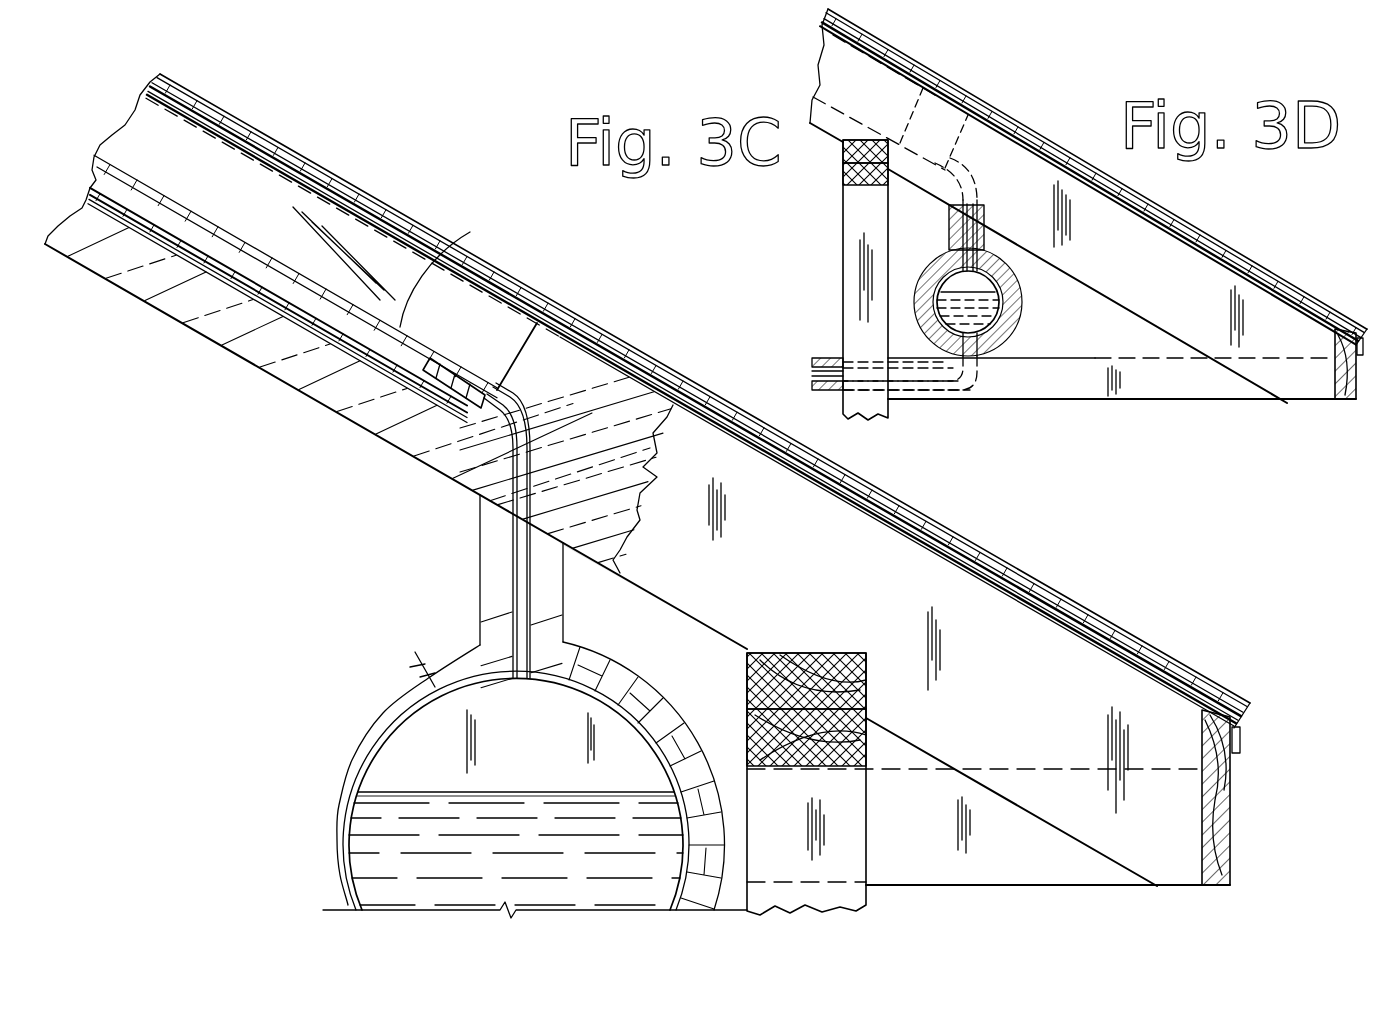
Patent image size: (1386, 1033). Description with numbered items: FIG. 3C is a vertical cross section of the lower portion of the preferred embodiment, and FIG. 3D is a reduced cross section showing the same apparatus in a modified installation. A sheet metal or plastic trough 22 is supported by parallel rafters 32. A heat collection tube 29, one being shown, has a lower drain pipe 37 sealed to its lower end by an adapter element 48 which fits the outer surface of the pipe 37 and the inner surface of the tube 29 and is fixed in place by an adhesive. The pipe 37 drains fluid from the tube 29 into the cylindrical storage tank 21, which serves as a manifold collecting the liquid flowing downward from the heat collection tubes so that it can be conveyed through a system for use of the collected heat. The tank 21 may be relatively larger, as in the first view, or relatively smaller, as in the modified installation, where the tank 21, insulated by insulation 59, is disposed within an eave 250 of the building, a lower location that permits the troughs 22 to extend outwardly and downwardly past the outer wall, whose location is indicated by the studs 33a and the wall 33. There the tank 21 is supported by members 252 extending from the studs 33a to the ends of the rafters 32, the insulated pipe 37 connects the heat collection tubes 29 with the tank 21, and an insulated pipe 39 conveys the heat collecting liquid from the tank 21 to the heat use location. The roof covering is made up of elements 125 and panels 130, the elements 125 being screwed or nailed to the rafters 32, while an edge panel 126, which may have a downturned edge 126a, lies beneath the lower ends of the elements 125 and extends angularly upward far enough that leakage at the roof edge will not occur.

In FIG. 3C, the cylindrical storage tank 21 is at (427, 697).
In FIG. 3D, the cylindrical storage tank 21 is at (1009, 334).
In FIG. 3C, the trough 22 is at (565, 320).
In FIG. 3D, the trough 22 is at (988, 100).
In FIG. 3C, the heat collection tube 29 is at (470, 232).
In FIG. 3D, the heat collection tube 29 is at (943, 72).
In FIG. 3C, the rafter 32 is at (690, 616).
In FIG. 3D, the rafter 32 is at (1050, 268).
In FIG. 3C, the wall 33 is at (868, 896).
In FIG. 3D, the stud 33a is at (843, 232).
In FIG. 3C, the lower drain pipe 37 is at (513, 565).
In FIG. 3D, the lower drain pipe 37 is at (980, 220).
In FIG. 3D, the pipe 39 is at (829, 371).
In FIG. 3C, the adapter element 48 is at (420, 378).
In FIG. 3C, the insulation 59 is at (217, 330).
In FIG. 3D, the insulation 59 is at (992, 252).
In FIG. 3C, the roof covering element 125 is at (1047, 584).
In FIG. 3D, the roof covering element 125 is at (1260, 260).
In FIG. 3C, the edge panel 126 is at (1030, 608).
In FIG. 3D, the edge panel 126 is at (1294, 296).
In FIG. 3C, the downturned edge 126a is at (1241, 745).
In FIG. 3D, the downturned edge 126a is at (1362, 348).
In FIG. 3C, the panel 130 is at (990, 552).
In FIG. 3D, the panel 130 is at (1197, 228).
In FIG. 3D, the eave 250 is at (1138, 419).
In FIG. 3D, the support member 252 is at (1002, 400).